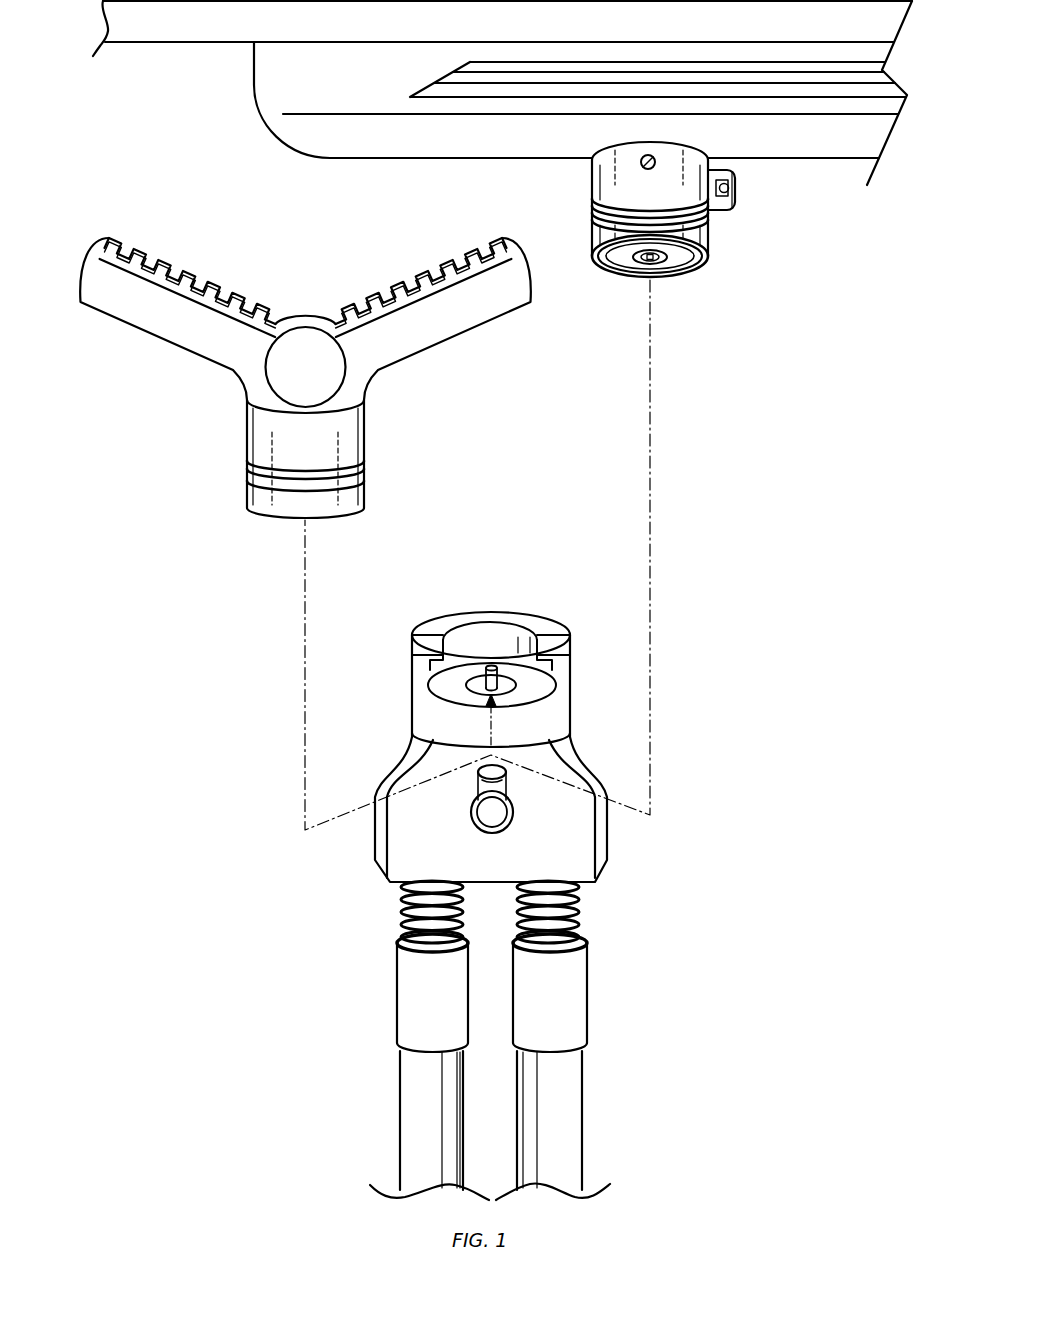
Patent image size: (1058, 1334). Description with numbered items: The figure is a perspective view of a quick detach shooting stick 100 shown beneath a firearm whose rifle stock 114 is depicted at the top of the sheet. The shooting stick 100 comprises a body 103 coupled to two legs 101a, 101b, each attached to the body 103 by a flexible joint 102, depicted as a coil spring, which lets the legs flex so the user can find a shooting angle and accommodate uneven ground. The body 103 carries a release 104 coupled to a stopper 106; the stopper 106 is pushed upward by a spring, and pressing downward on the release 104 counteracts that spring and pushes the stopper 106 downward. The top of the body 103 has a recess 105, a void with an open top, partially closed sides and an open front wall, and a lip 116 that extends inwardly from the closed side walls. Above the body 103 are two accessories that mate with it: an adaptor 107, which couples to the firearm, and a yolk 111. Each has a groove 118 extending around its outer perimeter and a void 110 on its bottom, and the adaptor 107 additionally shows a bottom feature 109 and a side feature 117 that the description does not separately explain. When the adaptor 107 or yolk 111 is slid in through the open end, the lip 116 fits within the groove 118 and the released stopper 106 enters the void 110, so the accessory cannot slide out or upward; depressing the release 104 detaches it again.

The shooting stick 100 is at (330, 918).
The leg 101a is at (587, 983).
The leg 101b is at (397, 997).
The flexible joint 102 is at (580, 905).
The body 103 is at (407, 748).
The release 104 is at (494, 808).
The recess 105 is at (463, 665).
The stopper 106 is at (492, 666).
The adaptor 107 is at (592, 188).
The bottom face 109 is at (672, 275).
The void 110 is at (623, 277).
The yolk 111 is at (192, 332).
The rifle stock 114 is at (437, 143).
The lip 116 is at (556, 648).
The boss 117 is at (740, 193).
The groove 118 is at (710, 215).